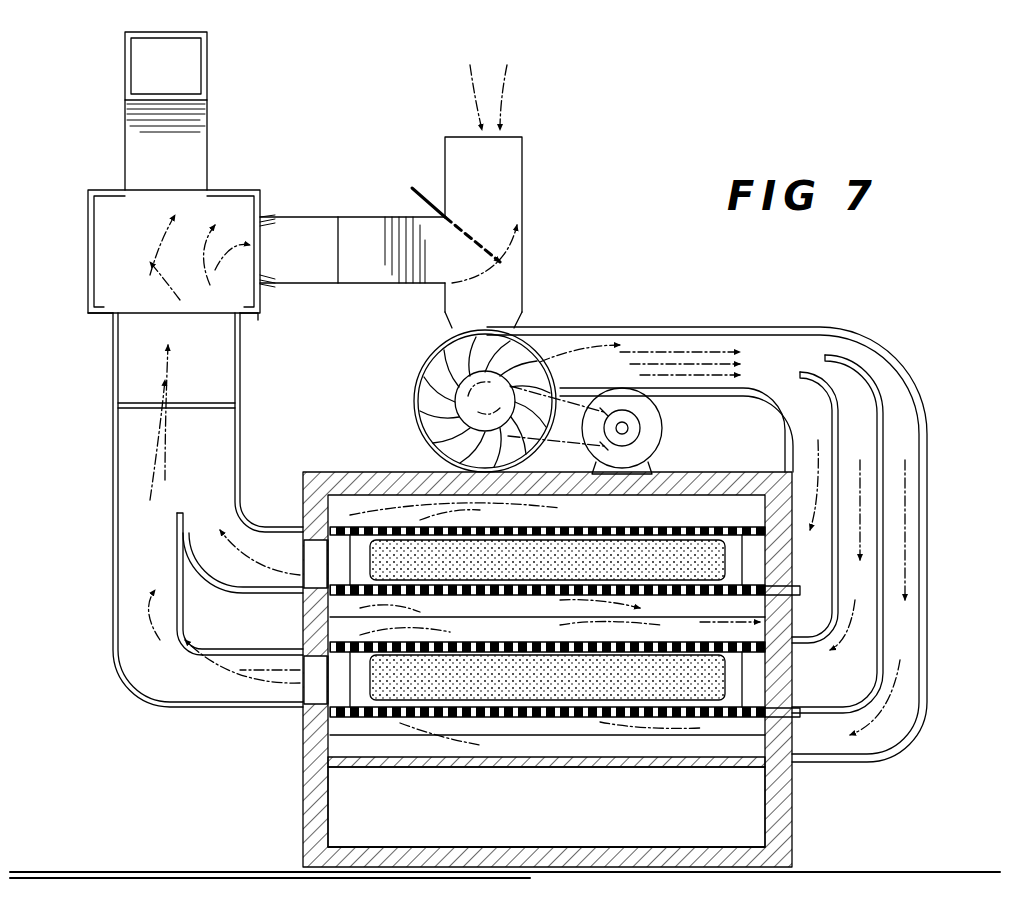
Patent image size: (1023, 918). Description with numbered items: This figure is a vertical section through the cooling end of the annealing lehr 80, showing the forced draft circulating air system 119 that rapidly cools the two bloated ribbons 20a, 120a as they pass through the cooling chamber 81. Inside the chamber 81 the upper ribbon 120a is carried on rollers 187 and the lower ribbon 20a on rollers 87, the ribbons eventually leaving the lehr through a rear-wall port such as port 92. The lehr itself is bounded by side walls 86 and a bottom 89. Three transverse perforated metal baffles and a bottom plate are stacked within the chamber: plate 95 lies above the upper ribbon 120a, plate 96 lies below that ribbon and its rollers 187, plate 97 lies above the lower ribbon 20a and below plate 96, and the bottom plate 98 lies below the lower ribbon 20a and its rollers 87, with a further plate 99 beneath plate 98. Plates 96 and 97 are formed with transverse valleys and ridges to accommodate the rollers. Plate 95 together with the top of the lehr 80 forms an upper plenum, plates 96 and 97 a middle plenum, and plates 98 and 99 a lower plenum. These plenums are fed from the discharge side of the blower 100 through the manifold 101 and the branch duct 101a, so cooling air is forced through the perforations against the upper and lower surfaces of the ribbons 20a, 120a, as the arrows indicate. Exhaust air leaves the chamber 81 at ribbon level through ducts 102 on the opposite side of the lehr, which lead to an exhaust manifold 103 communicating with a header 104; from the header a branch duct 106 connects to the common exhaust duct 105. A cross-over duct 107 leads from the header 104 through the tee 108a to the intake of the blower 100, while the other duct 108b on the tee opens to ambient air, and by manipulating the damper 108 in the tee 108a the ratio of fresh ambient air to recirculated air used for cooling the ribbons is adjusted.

The common exhaust duct 105 is at (207, 78).
The branch duct 106 is at (207, 158).
The header 104 is at (88, 280).
The forced draft circulating air system 119 is at (275, 210).
The cross-over duct 107 is at (320, 218).
The damper 108 is at (428, 185).
The other duct 108b is at (515, 172).
The tee 108a is at (520, 236).
The blower 100 is at (520, 352).
The manifold 101 is at (668, 330).
The branch duct 101a is at (800, 444).
The exhaust manifold 103 is at (113, 438).
The ducts 102 is at (270, 585).
The annealing lehr 80 is at (368, 472).
The cooling chamber 81 is at (312, 700).
The port 92 is at (355, 700).
The plate 95 is at (650, 525).
The ribbon 120a is at (735, 540).
The plate 96 is at (490, 590).
The rollers 187 is at (665, 590).
The plate 97 is at (618, 650).
The ribbon 20a is at (672, 700).
The bottom plate 98 is at (578, 718).
The plate 99 is at (515, 736).
The rollers 87 is at (458, 718).
The front side walls 86 is at (626, 824).
The bottom 89 is at (490, 850).